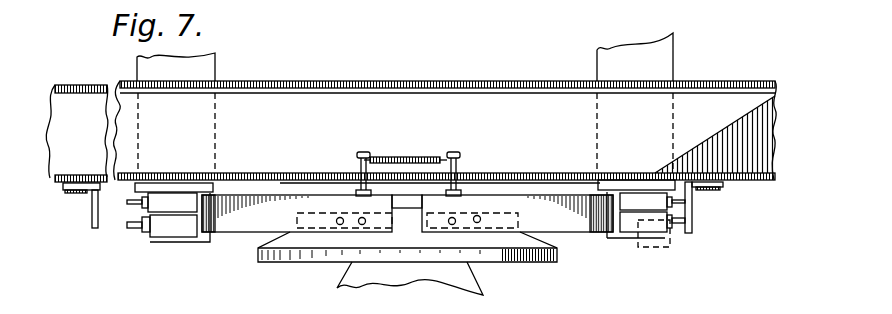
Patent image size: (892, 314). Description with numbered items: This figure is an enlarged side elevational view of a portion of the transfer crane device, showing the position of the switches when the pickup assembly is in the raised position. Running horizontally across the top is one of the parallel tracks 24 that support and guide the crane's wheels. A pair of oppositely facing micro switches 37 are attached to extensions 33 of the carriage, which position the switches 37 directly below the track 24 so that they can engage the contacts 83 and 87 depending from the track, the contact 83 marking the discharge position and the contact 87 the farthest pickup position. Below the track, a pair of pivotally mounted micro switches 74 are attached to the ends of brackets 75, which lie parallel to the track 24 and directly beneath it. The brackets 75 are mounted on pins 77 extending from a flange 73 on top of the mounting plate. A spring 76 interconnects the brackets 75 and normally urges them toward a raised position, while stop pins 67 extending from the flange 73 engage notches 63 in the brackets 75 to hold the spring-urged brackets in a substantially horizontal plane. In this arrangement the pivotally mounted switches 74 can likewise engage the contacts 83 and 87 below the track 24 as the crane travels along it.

The track 24 is at (284, 107).
The extension 33 is at (212, 69).
The micro switch 37 is at (165, 205).
The notch 63 is at (360, 217).
The stop pin 67 is at (354, 154).
The flange 73 is at (294, 240).
The pivotally mounted micro switch 74 is at (178, 228).
The bracket 75 is at (239, 210).
The spring 76 is at (414, 157).
The pin 77 is at (336, 215).
The contact 83 is at (692, 200).
The contact 87 is at (88, 203).